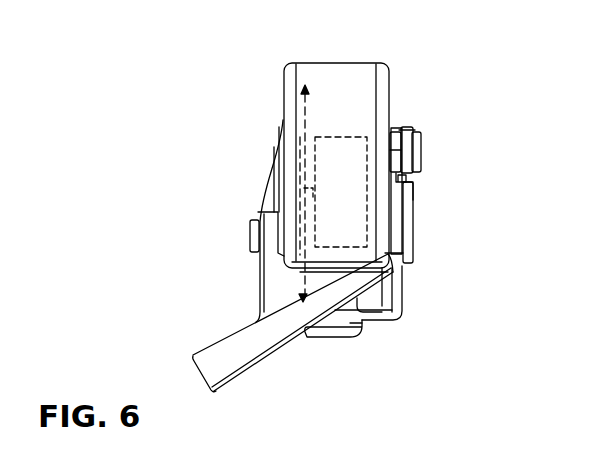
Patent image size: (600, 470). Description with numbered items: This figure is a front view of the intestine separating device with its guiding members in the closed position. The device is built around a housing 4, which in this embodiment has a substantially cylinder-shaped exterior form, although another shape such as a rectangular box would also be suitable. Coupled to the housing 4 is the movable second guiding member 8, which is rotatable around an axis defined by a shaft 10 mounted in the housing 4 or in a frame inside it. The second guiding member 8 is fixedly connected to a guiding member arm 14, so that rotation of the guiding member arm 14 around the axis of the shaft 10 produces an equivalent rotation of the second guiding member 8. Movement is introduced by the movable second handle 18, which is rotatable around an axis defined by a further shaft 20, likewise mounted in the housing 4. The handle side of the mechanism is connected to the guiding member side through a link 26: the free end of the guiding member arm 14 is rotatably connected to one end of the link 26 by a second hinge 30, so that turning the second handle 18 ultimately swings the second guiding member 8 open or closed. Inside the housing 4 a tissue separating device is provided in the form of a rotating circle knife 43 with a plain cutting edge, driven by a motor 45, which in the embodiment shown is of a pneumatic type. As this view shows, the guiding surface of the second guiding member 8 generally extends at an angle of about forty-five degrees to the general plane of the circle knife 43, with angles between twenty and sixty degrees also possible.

The housing 4 is at (333, 63).
The motor 45 is at (343, 137).
The circle knife 43 is at (304, 111).
The link 26 is at (406, 127).
The second hinge 30 is at (420, 148).
The shaft 20 is at (414, 194).
The guiding member arm 14 is at (393, 215).
The shaft 10 is at (410, 238).
The second handle 18 is at (350, 337).
The second guiding member 8 is at (237, 336).